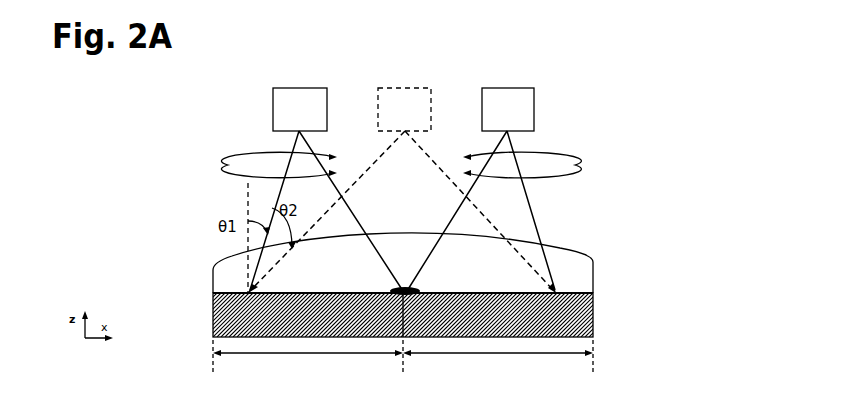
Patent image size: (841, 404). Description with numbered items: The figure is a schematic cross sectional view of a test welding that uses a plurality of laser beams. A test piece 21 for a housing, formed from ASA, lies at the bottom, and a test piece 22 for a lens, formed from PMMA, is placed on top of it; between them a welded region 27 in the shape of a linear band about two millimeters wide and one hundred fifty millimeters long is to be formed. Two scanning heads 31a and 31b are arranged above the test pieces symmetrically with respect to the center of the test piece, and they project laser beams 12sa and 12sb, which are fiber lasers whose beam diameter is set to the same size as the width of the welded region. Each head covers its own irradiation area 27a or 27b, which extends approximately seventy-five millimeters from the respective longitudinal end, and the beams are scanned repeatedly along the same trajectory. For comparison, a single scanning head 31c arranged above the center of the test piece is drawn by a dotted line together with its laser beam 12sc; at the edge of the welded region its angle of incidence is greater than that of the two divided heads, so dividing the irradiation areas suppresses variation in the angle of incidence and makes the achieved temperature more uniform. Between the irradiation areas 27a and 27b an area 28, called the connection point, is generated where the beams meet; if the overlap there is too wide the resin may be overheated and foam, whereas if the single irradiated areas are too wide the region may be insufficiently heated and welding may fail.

The scanning head 31a is at (268, 105).
The scanning head 31b is at (543, 106).
The single scanning head 31c is at (440, 103).
The laser beam 12sa is at (290, 140).
The laser beam 12sb is at (524, 141).
The laser beam 12sc is at (452, 182).
The test piece for a lens 22 is at (578, 260).
The test piece for a housing 21 is at (578, 321).
The welded region 27 is at (603, 295).
The connection point 28 is at (411, 288).
The irradiation area 27a is at (308, 361).
The irradiation area 27b is at (498, 361).